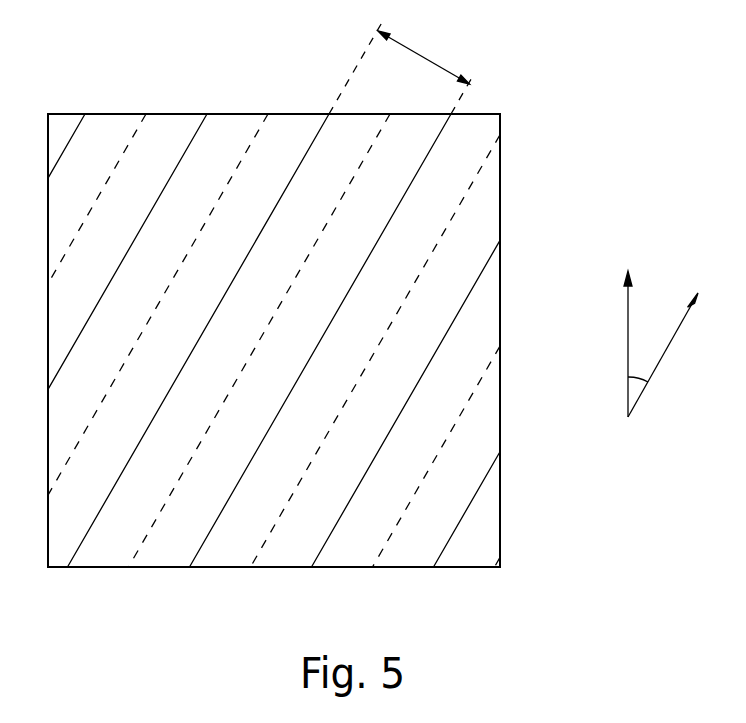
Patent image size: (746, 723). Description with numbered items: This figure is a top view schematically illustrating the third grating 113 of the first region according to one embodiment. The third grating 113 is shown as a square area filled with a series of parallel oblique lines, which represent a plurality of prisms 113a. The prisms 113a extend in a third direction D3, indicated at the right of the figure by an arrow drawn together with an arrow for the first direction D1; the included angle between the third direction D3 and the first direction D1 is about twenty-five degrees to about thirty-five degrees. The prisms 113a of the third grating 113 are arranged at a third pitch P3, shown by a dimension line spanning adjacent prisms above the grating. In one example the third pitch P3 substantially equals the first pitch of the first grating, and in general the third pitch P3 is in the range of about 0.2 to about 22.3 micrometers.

The third grating 113 is at (500, 178).
The prisms 113a is at (232, 128).
The third pitch P3 is at (401, 65).
The first direction D1 is at (607, 344).
The third direction D3 is at (666, 355).